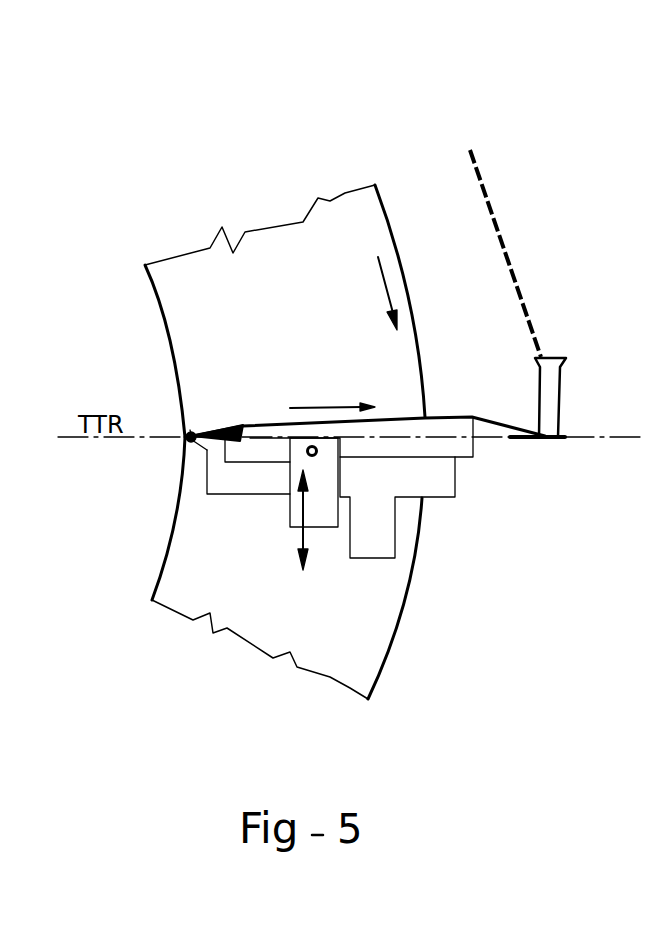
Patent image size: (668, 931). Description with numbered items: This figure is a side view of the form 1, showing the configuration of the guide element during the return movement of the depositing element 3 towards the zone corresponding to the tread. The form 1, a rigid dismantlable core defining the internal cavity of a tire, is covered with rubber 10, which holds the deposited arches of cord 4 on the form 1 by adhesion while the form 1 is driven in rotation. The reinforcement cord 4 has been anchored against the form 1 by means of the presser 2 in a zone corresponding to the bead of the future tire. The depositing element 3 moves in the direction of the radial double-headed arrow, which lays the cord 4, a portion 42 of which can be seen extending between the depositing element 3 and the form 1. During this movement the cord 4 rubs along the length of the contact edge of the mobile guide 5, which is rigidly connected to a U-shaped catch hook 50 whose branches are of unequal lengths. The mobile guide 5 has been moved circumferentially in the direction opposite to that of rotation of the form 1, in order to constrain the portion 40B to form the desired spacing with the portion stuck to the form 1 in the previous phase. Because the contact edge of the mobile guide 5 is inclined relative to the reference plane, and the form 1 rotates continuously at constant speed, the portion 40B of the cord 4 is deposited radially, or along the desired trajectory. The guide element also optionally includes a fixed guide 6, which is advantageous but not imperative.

The form 1 is at (355, 608).
The presser device 2 is at (191, 435).
The depositing element 3 is at (547, 403).
The reinforcement cord 4 is at (500, 233).
The mobile guide 5 is at (245, 447).
The fixed guide 6 is at (372, 508).
The rubber 10 is at (303, 290).
The cord portion 40B is at (400, 417).
The cord portion 42 is at (473, 417).
The catch hook 50 is at (320, 507).